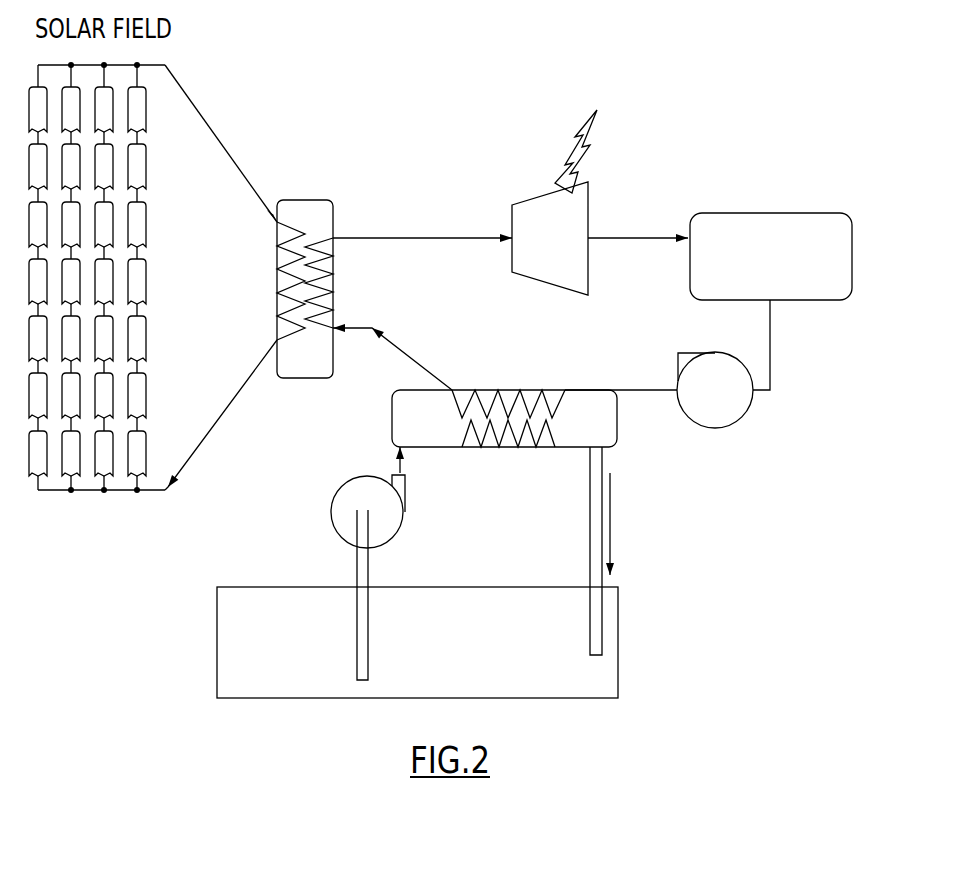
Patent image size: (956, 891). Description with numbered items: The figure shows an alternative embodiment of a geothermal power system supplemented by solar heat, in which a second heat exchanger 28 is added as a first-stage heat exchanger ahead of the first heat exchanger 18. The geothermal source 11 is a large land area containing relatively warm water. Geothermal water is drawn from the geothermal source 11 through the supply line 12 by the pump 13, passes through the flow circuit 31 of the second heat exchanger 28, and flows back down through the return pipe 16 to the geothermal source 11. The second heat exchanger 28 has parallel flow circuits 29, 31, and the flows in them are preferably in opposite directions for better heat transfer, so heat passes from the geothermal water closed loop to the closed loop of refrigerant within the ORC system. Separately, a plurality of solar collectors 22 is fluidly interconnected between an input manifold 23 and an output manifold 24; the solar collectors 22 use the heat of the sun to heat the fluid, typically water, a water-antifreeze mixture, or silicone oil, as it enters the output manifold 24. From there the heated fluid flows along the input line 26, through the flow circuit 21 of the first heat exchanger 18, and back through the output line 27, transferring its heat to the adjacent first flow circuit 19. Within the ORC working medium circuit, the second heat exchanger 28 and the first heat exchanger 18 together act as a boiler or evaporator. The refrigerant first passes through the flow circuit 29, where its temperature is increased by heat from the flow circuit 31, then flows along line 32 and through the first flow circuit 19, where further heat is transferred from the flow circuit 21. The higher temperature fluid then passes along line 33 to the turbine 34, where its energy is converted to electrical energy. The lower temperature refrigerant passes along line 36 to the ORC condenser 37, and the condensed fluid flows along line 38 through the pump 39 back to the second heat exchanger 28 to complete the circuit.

The geothermal source 11 is at (608, 667).
The supply line 12 is at (365, 580).
The pump 13 is at (400, 512).
The return pipe 16 is at (607, 455).
The first heat exchanger 18 is at (325, 210).
The first flow circuit 19 is at (332, 286).
The flow circuit 21 is at (285, 265).
The solar collectors 22 is at (146, 230).
The input manifold 23 is at (87, 492).
The output manifold 24 is at (163, 65).
The input line 26 is at (205, 120).
The output line 27 is at (222, 410).
The second heat exchanger 28 is at (608, 410).
The flow circuit 29 is at (550, 390).
The flow circuit 31 is at (520, 447).
The line 32 is at (410, 360).
The line 33 is at (428, 238).
The turbine 34 is at (572, 218).
The line 36 is at (640, 238).
The ORC condenser 37 is at (780, 220).
The line 38 is at (770, 375).
The pump 39 is at (733, 413).